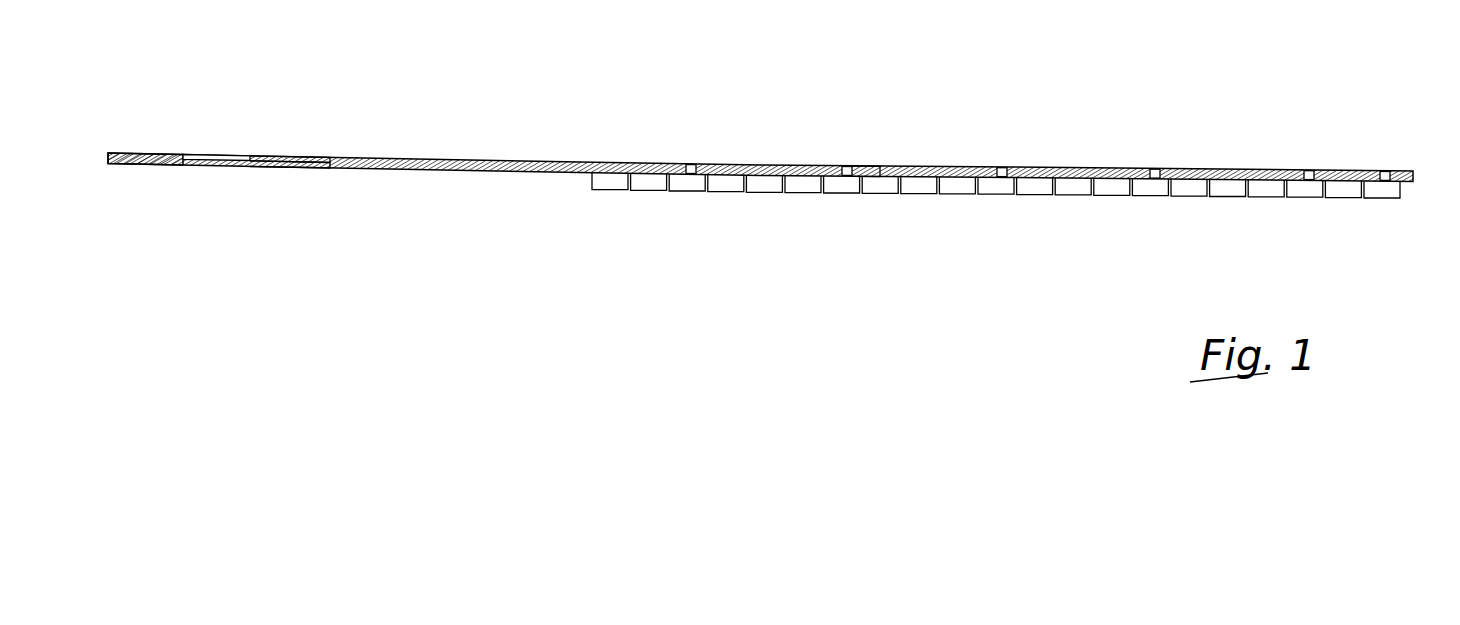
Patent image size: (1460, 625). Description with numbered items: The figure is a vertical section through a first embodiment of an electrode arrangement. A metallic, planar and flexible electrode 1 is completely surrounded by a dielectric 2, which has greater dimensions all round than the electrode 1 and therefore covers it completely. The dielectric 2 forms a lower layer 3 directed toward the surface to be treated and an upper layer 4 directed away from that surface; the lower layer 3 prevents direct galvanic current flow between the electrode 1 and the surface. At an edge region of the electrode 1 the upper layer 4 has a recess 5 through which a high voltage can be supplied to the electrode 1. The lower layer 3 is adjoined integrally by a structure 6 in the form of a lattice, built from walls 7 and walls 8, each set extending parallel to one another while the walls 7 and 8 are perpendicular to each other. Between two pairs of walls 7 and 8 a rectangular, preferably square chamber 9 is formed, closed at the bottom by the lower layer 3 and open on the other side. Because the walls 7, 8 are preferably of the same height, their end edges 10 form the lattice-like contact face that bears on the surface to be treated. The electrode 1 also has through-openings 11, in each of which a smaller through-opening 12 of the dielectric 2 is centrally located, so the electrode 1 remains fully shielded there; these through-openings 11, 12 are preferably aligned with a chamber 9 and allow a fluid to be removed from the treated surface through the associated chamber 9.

The electrode 1 is at (478, 170).
The dielectric 2 is at (133, 153).
The lower layer 3 is at (306, 170).
The upper layer 4 is at (299, 153).
The recess 5 is at (224, 153).
The structure 6 is at (1419, 199).
The walls 7 is at (985, 195).
The walls 8 is at (1153, 192).
The chamber 9 is at (1081, 206).
The end edges 10 is at (868, 206).
The through-openings 11 is at (864, 160).
The through-opening 12 is at (843, 165).